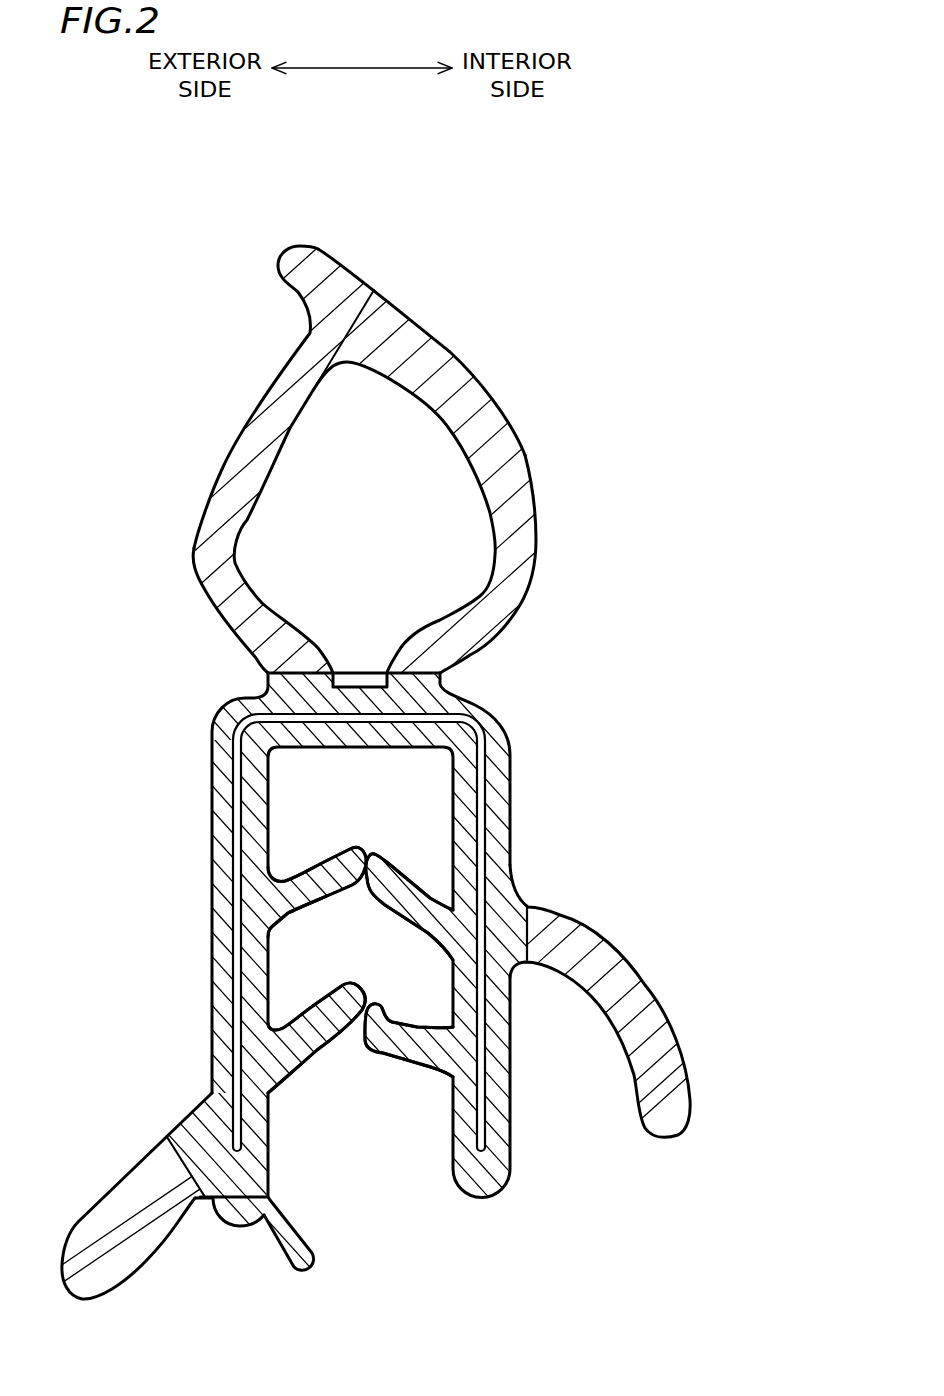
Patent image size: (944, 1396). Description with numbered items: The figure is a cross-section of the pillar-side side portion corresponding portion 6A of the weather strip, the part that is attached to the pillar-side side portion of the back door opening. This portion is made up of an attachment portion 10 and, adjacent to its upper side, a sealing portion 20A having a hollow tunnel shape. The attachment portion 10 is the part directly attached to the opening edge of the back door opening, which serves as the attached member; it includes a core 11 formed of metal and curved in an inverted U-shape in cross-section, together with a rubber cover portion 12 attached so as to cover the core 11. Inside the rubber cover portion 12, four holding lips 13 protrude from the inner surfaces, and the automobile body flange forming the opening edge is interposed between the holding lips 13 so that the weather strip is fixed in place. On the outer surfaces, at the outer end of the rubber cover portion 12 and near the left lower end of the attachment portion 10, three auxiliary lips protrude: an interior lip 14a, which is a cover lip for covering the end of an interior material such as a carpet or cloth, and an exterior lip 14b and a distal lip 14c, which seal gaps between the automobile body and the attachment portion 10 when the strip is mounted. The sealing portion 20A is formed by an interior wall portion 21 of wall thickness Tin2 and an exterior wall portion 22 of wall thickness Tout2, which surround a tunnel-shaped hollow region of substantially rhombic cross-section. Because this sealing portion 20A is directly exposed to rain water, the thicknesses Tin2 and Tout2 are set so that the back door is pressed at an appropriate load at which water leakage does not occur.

The pillar-side side portion corresponding portion 6A is at (753, 248).
The sealing portion 20A is at (367, 511).
The interior wall portion 21 is at (507, 484).
The exterior wall portion 22 is at (222, 497).
The wall thickness of interior wall portion Tin2 is at (402, 463).
The wall thickness of exterior wall portion Tout2 is at (333, 463).
The attachment portion 10 is at (385, 698).
The core 11 is at (243, 887).
The rubber cover portion 12 is at (222, 828).
The holding lips 13 is at (330, 888).
The interior lip 14a is at (630, 1040).
The exterior lip 14b is at (127, 1253).
The distal lip 14c is at (277, 1250).